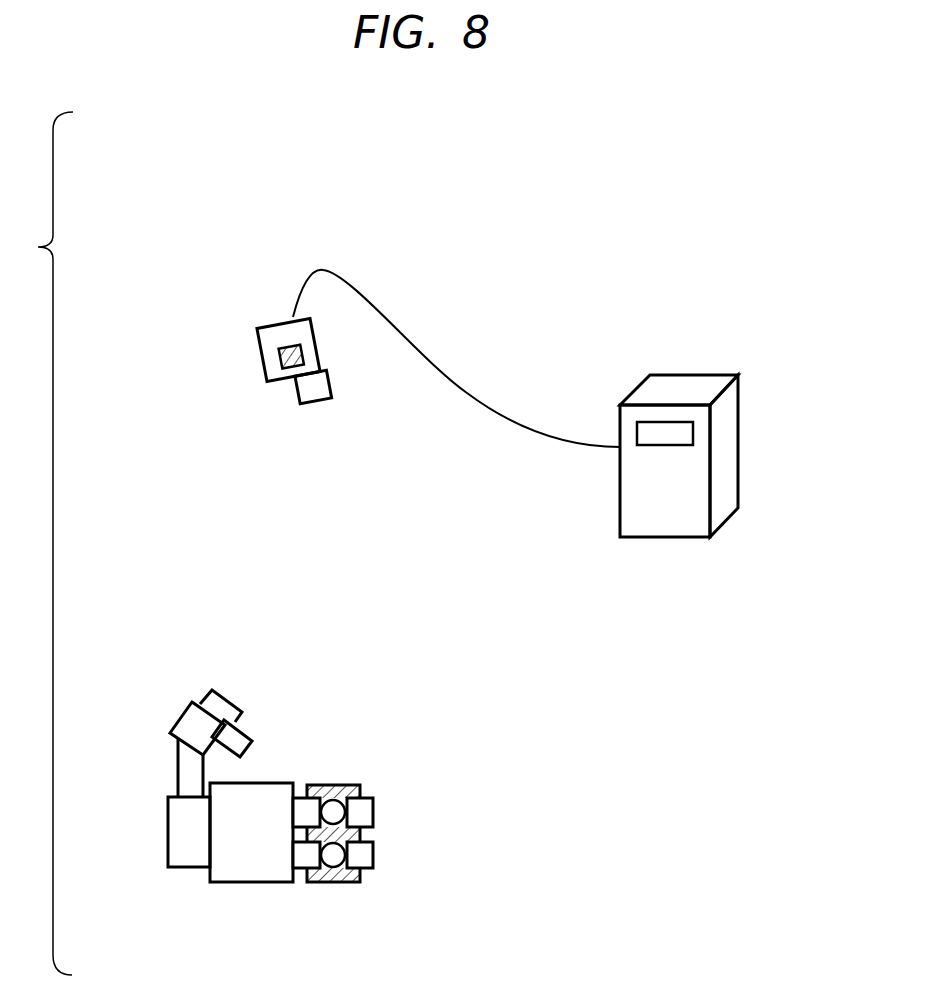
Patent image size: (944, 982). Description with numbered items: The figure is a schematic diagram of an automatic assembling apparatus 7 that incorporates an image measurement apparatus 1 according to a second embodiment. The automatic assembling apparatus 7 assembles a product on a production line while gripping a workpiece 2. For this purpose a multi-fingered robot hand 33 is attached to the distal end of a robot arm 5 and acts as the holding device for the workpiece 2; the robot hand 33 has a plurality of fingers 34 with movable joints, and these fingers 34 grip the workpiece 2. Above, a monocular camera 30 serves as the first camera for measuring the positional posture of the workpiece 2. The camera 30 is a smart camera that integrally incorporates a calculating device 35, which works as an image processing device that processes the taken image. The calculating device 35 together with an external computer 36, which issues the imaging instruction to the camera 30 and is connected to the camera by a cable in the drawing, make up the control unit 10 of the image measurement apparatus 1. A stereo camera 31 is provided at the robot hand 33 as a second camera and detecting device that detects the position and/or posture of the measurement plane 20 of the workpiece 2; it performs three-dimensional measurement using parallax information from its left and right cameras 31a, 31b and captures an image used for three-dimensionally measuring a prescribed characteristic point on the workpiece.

The image measurement apparatus 1 is at (216, 296).
The workpiece 2 is at (350, 883).
The robot arm 5 is at (171, 907).
The automatic assembling apparatus 7 is at (532, 217).
The control unit 10 is at (746, 359).
The measurement plane 20 is at (368, 783).
The monocular camera 30 is at (272, 320).
The stereo camera 31 is at (132, 604).
The left camera 31a is at (208, 692).
The right camera 31b is at (182, 720).
The multi-fingered robot hand 33 is at (284, 775).
The fingers 34 is at (373, 808).
The calculating device 35 is at (277, 360).
The external computer 36 is at (685, 372).